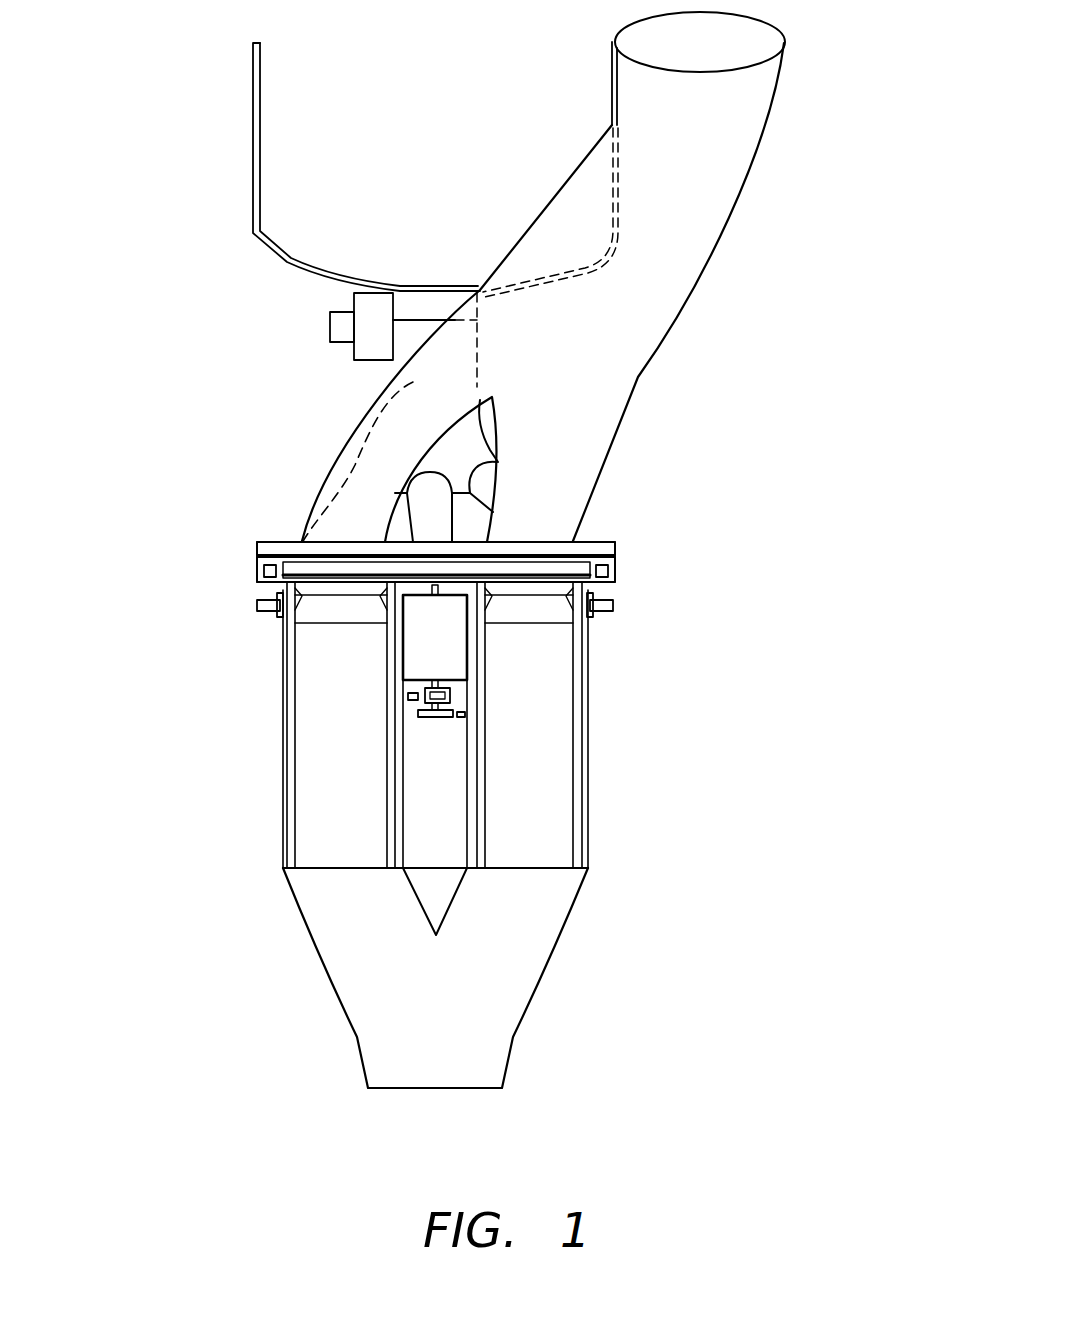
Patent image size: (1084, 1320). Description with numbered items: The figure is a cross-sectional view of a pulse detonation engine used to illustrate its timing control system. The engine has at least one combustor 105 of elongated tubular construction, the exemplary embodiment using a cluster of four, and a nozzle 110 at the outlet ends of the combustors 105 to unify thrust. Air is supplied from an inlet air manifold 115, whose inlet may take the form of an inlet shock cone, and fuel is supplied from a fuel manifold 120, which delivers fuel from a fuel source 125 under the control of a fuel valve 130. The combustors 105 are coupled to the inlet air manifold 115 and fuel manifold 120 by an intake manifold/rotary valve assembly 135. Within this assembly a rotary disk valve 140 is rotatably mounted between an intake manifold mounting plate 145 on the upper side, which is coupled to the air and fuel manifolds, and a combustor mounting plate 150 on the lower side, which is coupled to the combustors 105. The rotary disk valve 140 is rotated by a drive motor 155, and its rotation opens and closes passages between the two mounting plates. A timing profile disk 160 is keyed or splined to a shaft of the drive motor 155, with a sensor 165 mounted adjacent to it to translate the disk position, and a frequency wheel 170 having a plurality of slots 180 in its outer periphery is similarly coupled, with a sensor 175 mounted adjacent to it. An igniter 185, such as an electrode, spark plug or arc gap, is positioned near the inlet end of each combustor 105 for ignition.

The combustor 105 is at (545, 797).
The nozzle 110 is at (527, 962).
The inlet air manifold 115 is at (722, 147).
The fuel manifold 120 is at (395, 396).
The fuel source 125 is at (285, 180).
The fuel valve 130 is at (330, 327).
The intake manifold/rotary valve assembly 135 is at (624, 548).
The rotary disk valve 140 is at (258, 568).
The intake manifold mounting plate 145 is at (257, 546).
The combustor mounting plate 150 is at (258, 586).
The drive motor 155 is at (455, 630).
The timing profile disk 160 is at (418, 716).
The sensor 165 is at (480, 708).
The frequency wheel 170 is at (462, 690).
The sensor 175 is at (405, 710).
The slots 180 is at (405, 682).
The igniter 185 is at (617, 606).